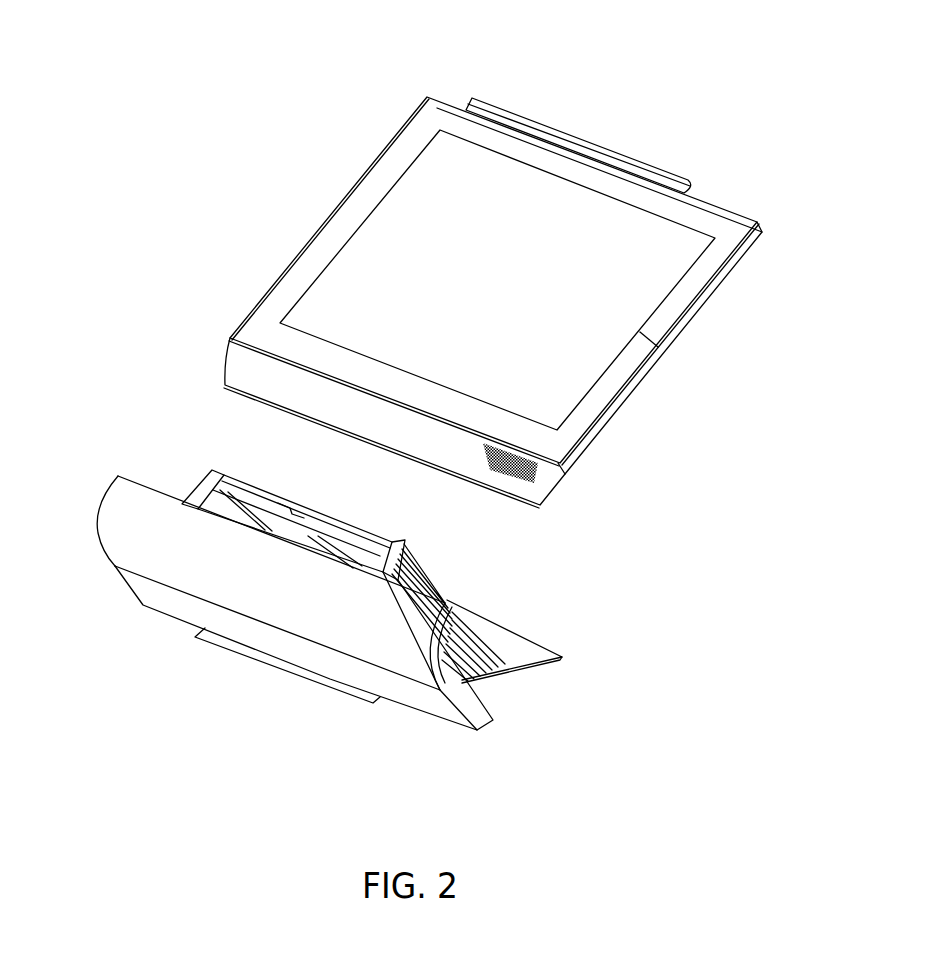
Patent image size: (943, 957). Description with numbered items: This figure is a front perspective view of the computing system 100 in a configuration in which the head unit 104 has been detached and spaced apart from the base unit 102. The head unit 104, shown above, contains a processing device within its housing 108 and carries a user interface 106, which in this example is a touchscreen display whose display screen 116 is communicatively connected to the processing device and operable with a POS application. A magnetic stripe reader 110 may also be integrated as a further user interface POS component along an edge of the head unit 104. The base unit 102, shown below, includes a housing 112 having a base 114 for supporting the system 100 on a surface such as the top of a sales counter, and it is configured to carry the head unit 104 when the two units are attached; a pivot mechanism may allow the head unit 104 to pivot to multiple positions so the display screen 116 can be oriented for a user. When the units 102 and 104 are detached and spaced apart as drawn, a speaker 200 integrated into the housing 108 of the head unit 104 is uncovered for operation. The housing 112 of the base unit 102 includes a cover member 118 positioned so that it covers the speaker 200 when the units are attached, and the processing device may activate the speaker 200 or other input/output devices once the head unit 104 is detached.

The computing system 100 is at (214, 134).
The base unit 102 is at (143, 605).
The head unit 104 is at (757, 222).
The user interface 106 is at (313, 247).
The housing 108 is at (427, 98).
The magnetic stripe reader 110 is at (684, 180).
The housing 112 is at (475, 730).
The base 114 is at (525, 640).
The display screen 116 is at (658, 347).
The cover member 118 is at (98, 522).
The speaker 200 is at (533, 480).